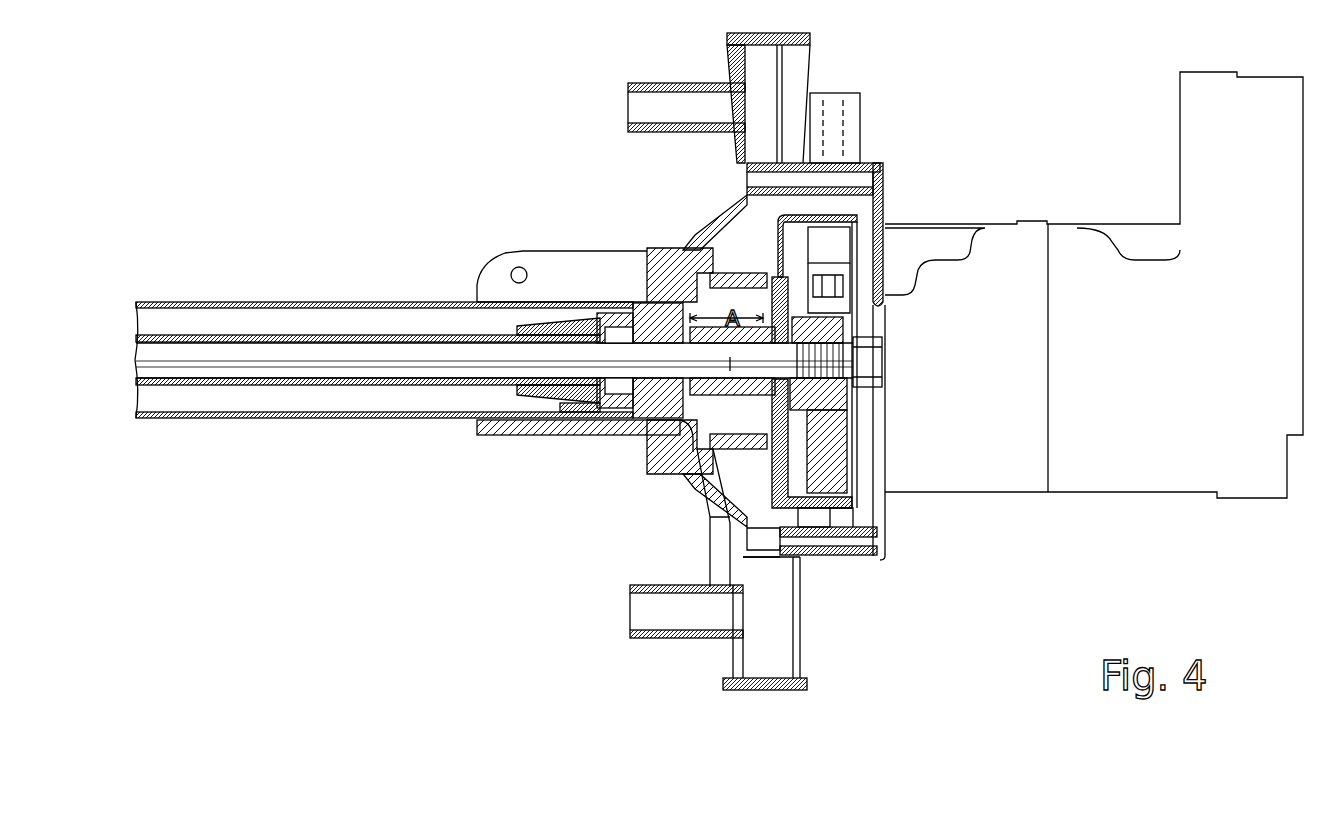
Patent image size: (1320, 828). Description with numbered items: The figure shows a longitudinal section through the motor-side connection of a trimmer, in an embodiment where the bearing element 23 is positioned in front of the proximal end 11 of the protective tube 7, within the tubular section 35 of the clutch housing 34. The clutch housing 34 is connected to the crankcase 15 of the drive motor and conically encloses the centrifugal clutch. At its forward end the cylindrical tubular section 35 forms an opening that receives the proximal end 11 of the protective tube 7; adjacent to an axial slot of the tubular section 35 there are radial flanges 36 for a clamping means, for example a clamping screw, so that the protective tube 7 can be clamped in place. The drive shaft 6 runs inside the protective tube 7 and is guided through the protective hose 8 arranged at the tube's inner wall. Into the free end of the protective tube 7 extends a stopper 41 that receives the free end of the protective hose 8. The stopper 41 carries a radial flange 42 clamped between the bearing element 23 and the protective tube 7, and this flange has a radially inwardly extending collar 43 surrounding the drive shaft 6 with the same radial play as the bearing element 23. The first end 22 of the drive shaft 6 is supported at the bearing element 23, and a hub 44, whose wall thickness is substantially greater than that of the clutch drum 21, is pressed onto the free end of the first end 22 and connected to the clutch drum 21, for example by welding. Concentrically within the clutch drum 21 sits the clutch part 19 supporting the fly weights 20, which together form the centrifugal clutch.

The drive shaft 6 is at (203, 353).
The protective tube 7 is at (368, 419).
The protective hose 8 is at (286, 386).
The proximal end 11 is at (557, 436).
The crankcase 15 is at (888, 175).
The clutch part 19 is at (828, 412).
The fly weights 20 is at (823, 482).
The clutch drum 21 is at (832, 527).
The first end 22 is at (693, 448).
The bearing element 23 is at (648, 436).
The clutch housing 34 is at (712, 158).
The tubular section 35 is at (588, 436).
The radial flanges 36 is at (528, 262).
The stopper 41 is at (545, 326).
The radial flange 42 is at (640, 305).
The collar 43 is at (608, 315).
The hub 44 is at (713, 507).